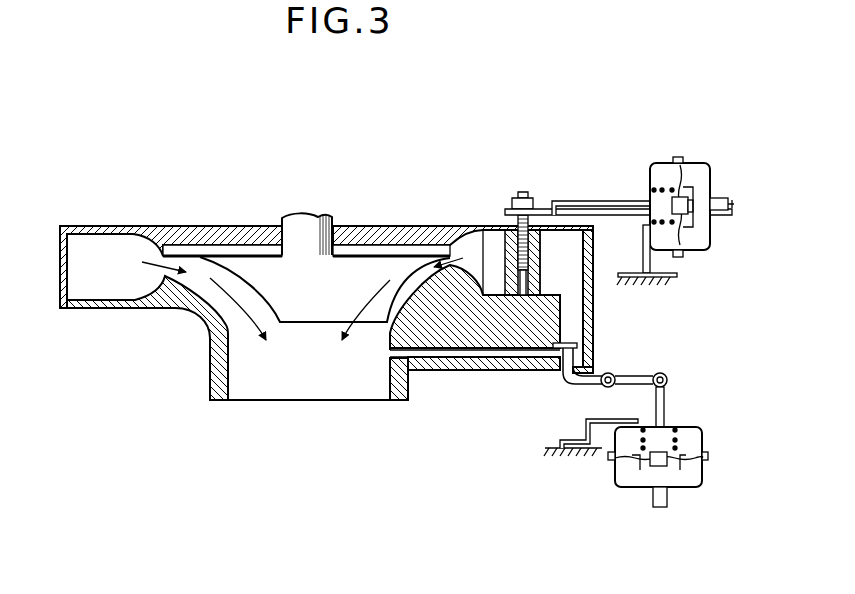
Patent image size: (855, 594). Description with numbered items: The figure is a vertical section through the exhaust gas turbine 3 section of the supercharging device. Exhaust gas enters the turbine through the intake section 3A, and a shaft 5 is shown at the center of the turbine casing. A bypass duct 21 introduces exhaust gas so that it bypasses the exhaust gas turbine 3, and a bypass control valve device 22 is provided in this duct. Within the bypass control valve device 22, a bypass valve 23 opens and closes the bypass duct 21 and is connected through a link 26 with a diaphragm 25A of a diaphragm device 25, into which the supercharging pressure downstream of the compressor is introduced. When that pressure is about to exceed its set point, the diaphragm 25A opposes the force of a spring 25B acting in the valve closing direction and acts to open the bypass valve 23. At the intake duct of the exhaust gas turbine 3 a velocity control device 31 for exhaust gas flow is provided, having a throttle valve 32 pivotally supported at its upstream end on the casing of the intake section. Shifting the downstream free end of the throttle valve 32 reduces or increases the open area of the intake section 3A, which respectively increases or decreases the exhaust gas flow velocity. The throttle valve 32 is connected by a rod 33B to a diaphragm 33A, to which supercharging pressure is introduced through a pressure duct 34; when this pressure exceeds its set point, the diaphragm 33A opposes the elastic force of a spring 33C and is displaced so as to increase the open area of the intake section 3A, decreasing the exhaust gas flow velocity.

The exhaust gas turbine 3 is at (250, 211).
The intake section 3A is at (575, 277).
The shaft 5 is at (310, 213).
The bypass duct 21 is at (460, 357).
The bypass control valve device 22 is at (616, 490).
The bypass valve 23 is at (562, 372).
The diaphragm device 25 is at (708, 490).
The diaphragm 25A is at (630, 458).
The spring 25B is at (678, 440).
The link 26 is at (638, 374).
The velocity control device 31 is at (692, 156).
The throttle valve 32 is at (507, 258).
The diaphragm 33A is at (682, 170).
The rod 33B is at (620, 216).
The spring 33C is at (652, 192).
The pressure duct 34 is at (726, 212).